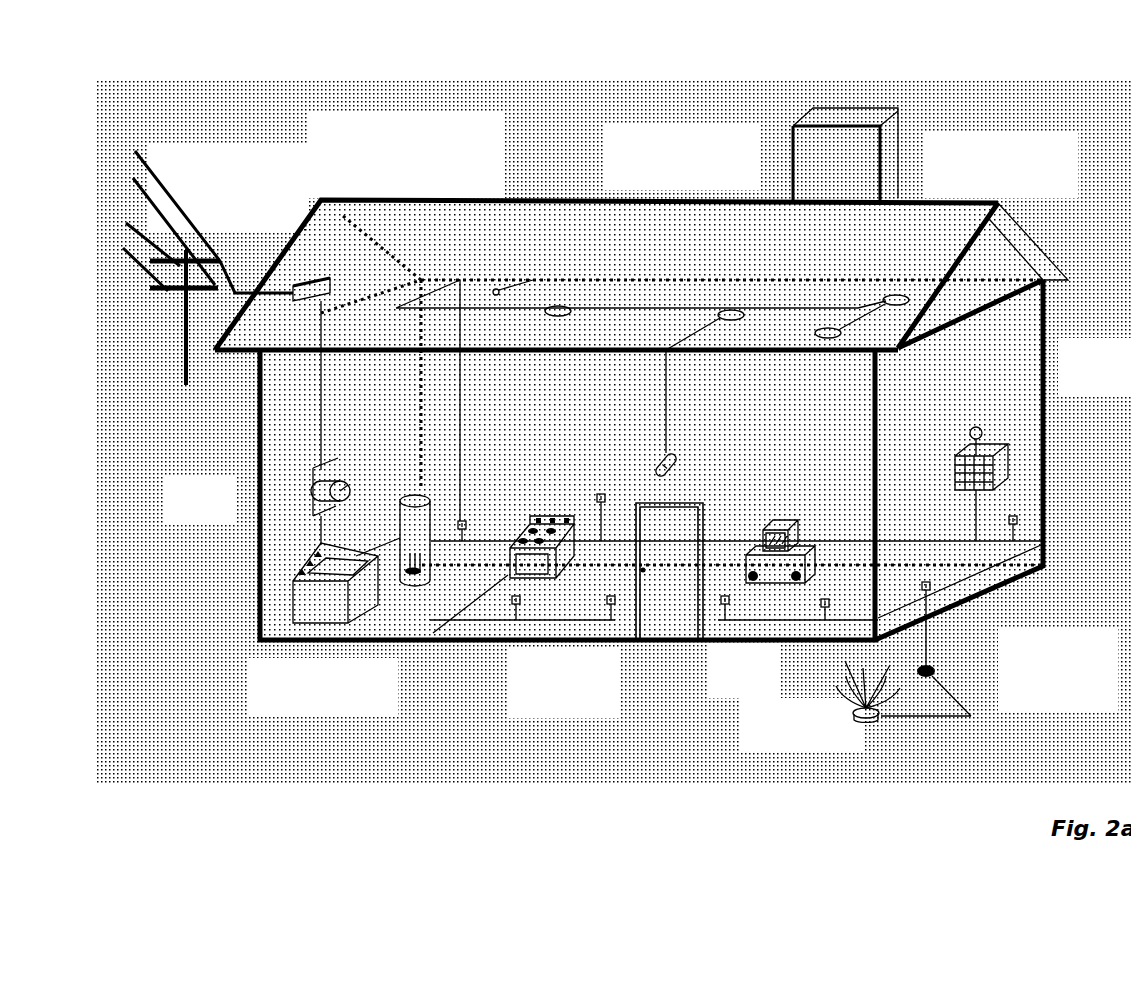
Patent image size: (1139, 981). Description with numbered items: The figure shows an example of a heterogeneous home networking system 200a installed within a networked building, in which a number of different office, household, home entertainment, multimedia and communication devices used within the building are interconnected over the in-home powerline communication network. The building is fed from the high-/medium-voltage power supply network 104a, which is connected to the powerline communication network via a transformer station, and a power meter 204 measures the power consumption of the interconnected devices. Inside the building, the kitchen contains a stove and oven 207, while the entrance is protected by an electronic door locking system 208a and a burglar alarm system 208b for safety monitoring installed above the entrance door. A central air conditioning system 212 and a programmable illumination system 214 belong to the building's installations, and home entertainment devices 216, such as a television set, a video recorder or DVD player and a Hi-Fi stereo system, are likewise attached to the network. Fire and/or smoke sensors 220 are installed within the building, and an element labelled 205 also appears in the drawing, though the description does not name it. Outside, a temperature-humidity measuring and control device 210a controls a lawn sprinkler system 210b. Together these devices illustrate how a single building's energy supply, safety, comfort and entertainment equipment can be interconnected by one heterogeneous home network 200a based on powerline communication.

The heterogeneous home networking system 200a is at (641, 336).
The high-/medium-voltage power supply network 104a is at (208, 268).
The power meter 204 is at (288, 492).
The water heater and controller 205 is at (403, 585).
The stove and oven 207 is at (542, 533).
The electronic door locking system 208a is at (635, 587).
The burglar alarm system 208b is at (653, 490).
The temperature-humidity measuring and control device 210a is at (937, 660).
The lawn sprinkler system 210b is at (845, 700).
The central air conditioning system 212 is at (968, 405).
The programmable illumination system 214 is at (895, 265).
The home entertainment devices 216 is at (772, 476).
The fire and/or smoke sensors 220 is at (482, 243).